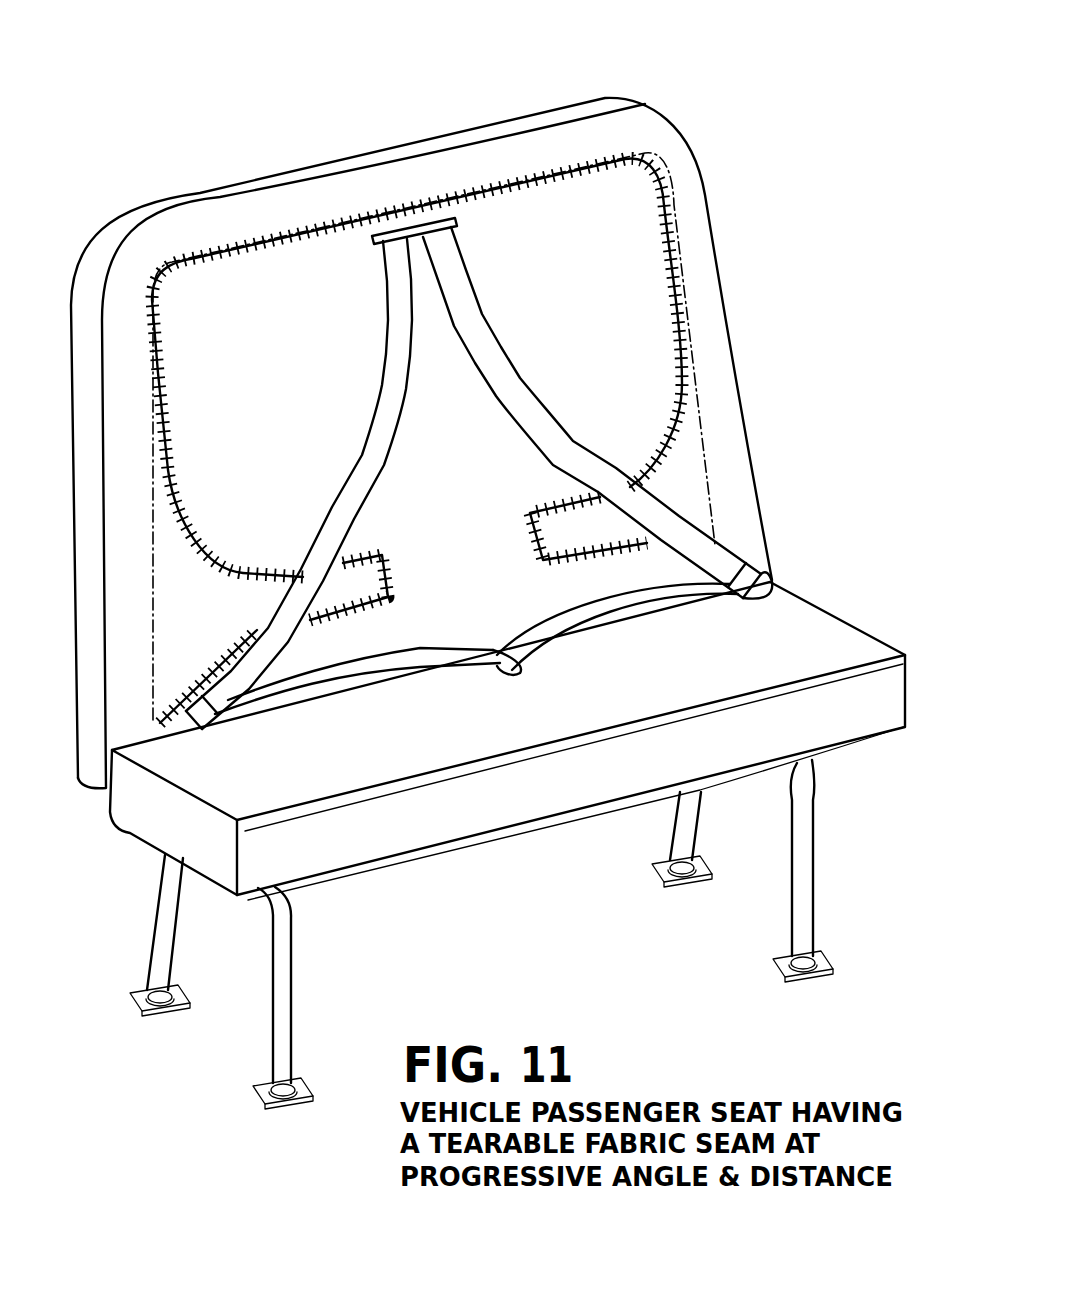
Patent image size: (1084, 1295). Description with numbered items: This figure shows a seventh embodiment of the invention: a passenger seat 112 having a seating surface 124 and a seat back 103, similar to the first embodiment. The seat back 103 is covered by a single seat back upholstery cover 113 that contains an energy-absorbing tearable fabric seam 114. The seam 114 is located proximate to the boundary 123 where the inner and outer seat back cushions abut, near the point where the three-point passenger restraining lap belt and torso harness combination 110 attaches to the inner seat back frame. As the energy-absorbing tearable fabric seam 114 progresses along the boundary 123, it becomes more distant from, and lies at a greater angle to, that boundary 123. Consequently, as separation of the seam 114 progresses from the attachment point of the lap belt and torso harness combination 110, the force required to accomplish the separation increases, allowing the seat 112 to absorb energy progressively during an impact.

The seat back 103 is at (473, 503).
The three-point passenger restraining lap belt and torso harness combination 110 is at (540, 422).
The passenger seat 112 is at (767, 617).
The seat back upholstery cover 113 is at (657, 130).
The energy-absorbing tearable fabric seam 114 is at (667, 250).
The boundary 123 is at (530, 175).
The seating surface 124 is at (807, 653).